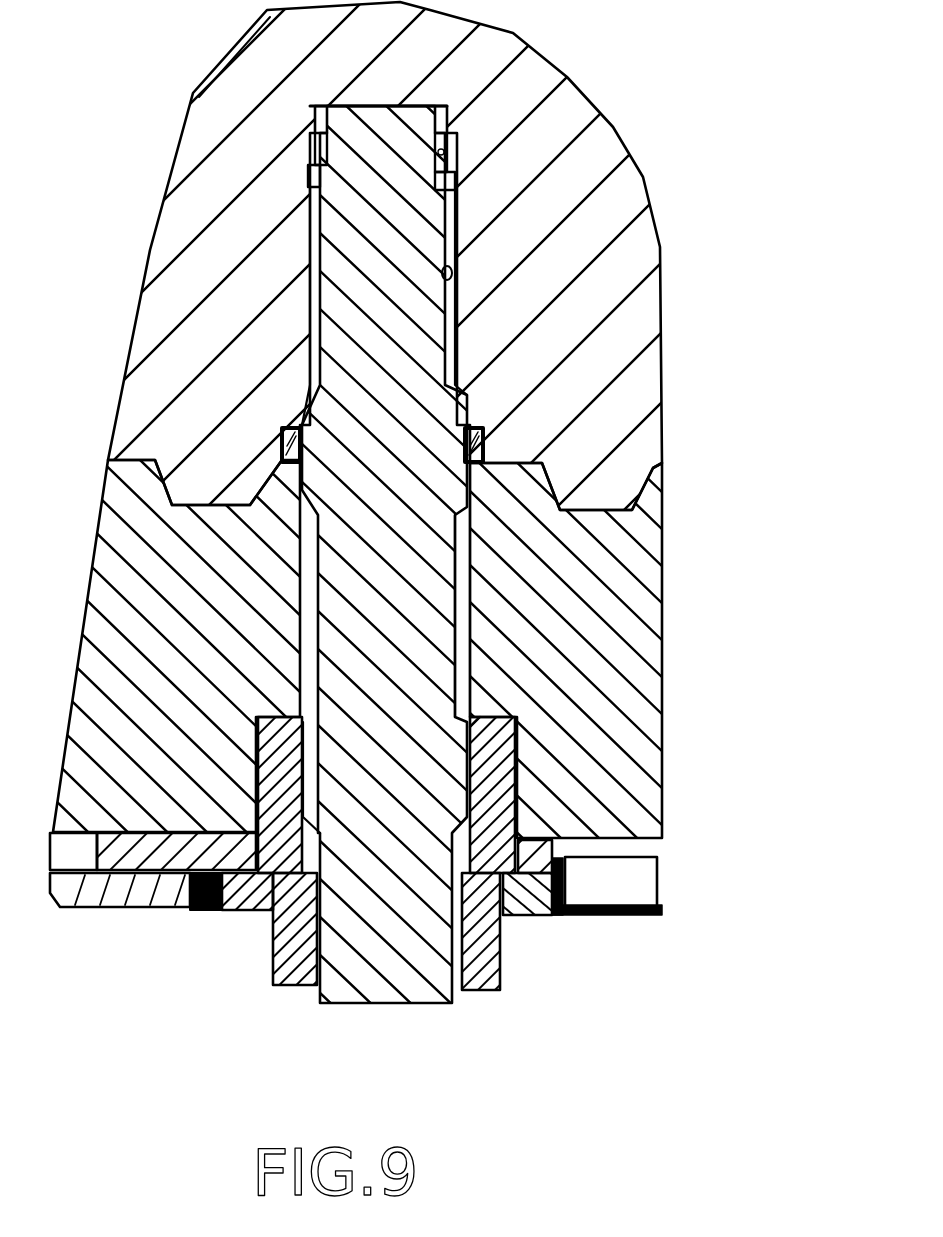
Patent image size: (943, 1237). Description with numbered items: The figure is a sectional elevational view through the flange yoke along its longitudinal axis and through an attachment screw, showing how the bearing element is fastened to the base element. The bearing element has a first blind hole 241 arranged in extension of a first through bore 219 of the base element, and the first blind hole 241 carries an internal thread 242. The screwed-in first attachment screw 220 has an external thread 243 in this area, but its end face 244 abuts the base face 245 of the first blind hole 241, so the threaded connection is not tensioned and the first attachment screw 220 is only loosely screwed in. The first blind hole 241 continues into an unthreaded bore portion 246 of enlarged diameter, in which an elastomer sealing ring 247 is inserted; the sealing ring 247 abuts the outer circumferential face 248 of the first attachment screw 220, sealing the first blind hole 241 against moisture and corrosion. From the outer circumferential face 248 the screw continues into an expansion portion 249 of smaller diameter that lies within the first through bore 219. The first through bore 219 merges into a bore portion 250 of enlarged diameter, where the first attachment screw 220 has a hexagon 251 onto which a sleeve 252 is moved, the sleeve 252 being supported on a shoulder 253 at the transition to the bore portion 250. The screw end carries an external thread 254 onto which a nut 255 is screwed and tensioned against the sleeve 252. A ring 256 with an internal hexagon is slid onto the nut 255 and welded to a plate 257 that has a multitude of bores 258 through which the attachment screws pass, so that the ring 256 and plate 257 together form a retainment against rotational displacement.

The first through bore 219 is at (465, 568).
The first attachment screw 220 is at (350, 580).
The first blind hole 241 is at (448, 158).
The internal thread 242 is at (452, 272).
The external thread 243 is at (458, 214).
The end face 244 is at (420, 104).
The base face 245 is at (322, 120).
The bore portion 246 is at (478, 426).
The sealing ring 247 is at (288, 426).
The outer circumferential face 248 is at (474, 485).
The expansion portion 249 is at (462, 612).
The bore portion 250 is at (512, 772).
The hexagon 251 is at (258, 742).
The sleeve 252 is at (282, 815).
The shoulder 253 is at (478, 720).
The external thread 254 is at (478, 990).
The nut 255 is at (300, 990).
The ring 256 is at (528, 912).
The plate 257 is at (140, 908).
The bores 258 is at (230, 912).